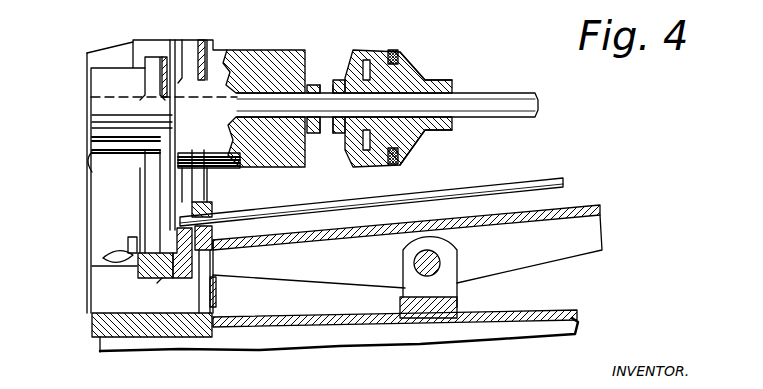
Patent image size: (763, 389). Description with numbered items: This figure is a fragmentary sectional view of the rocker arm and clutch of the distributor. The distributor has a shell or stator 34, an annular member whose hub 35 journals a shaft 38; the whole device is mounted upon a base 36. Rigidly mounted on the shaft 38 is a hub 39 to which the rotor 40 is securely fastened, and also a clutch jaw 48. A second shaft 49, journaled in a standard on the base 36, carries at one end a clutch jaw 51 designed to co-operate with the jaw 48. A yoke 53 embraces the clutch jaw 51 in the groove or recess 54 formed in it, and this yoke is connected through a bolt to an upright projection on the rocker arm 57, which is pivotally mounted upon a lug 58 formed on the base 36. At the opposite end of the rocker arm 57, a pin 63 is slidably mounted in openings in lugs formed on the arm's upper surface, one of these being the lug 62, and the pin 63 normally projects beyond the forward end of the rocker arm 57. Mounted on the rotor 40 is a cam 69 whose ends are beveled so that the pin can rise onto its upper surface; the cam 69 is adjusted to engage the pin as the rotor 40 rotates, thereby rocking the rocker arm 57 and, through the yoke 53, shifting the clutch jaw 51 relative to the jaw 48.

The shell or stator 34 is at (100, 300).
The hub 35 is at (298, 45).
The base 36 is at (580, 312).
The shaft 38 is at (283, 107).
The hub 39 is at (92, 152).
The rotor 40 is at (92, 266).
The clutch jaw 48 is at (350, 153).
The shaft 49 is at (495, 98).
The clutch jaw 51 is at (423, 72).
The yoke 53 is at (400, 160).
The groove or recess 54 is at (398, 56).
The rocker arm 57 is at (577, 217).
The lug 58 is at (403, 298).
The lug 62 is at (182, 228).
The pin 63 is at (503, 183).
The cam 69 is at (157, 283).